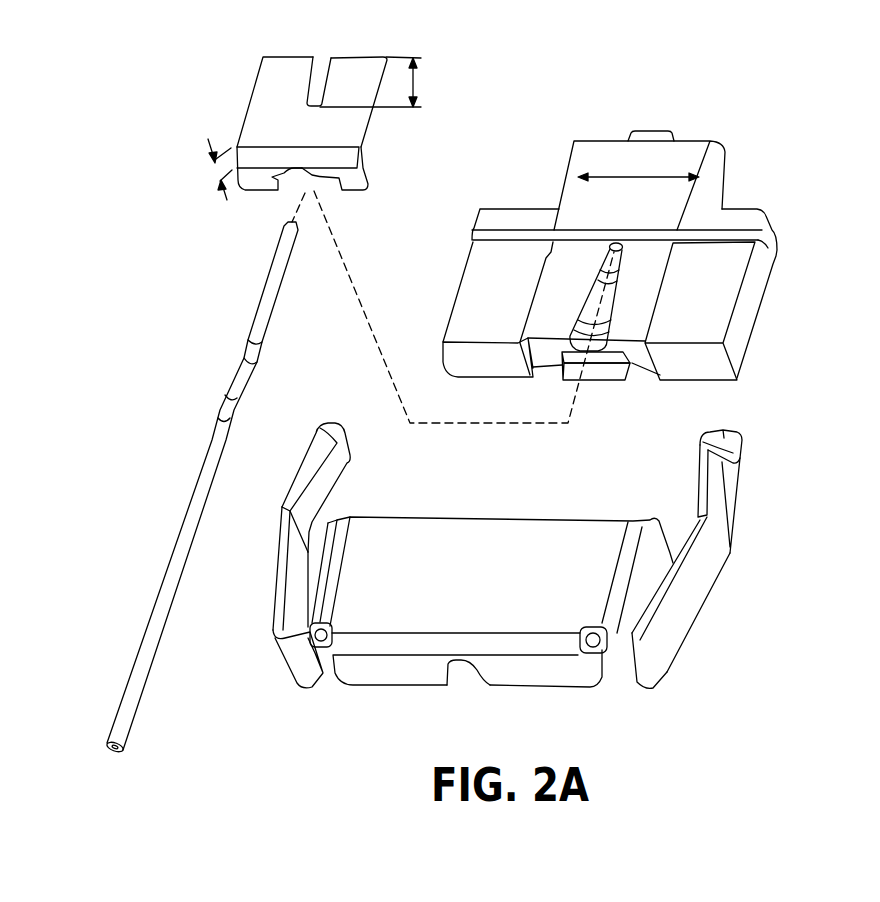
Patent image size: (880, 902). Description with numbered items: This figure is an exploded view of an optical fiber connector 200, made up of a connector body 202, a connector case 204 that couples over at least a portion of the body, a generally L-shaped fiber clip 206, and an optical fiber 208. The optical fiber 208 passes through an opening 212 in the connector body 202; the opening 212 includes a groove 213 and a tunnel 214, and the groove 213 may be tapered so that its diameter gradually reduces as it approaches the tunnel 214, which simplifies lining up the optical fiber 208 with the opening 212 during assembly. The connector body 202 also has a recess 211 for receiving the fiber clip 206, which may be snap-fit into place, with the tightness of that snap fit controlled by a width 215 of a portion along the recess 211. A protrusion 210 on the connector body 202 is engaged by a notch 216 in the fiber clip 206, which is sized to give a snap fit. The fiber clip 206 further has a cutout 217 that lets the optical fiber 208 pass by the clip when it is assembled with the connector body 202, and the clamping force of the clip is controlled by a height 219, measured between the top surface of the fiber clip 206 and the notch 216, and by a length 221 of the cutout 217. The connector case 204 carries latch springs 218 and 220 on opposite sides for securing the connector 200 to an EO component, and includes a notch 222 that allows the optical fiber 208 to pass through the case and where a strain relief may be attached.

The optical fiber connector 200 is at (760, 745).
The connector body 202 is at (722, 182).
The connector case 204 is at (480, 527).
The fiber clip 206 is at (272, 68).
The optical fiber 208 is at (200, 458).
The protrusion 210 is at (604, 372).
The recess 211 is at (638, 297).
The opening 212 is at (572, 366).
The groove 213 is at (592, 301).
The tunnel 214 is at (613, 243).
The width 215 is at (608, 174).
The notch 216 is at (326, 188).
The cutout 217 is at (326, 70).
The latch spring 218 is at (268, 568).
The height 219 is at (216, 174).
The latch spring 220 is at (693, 600).
The length 221 is at (416, 83).
The notch 222 is at (462, 677).